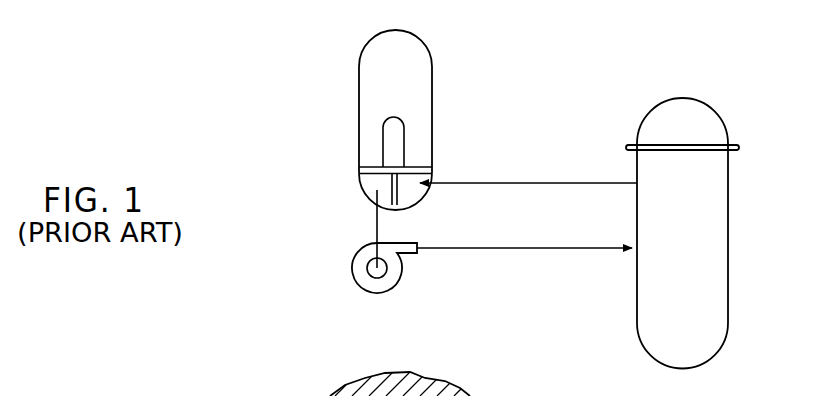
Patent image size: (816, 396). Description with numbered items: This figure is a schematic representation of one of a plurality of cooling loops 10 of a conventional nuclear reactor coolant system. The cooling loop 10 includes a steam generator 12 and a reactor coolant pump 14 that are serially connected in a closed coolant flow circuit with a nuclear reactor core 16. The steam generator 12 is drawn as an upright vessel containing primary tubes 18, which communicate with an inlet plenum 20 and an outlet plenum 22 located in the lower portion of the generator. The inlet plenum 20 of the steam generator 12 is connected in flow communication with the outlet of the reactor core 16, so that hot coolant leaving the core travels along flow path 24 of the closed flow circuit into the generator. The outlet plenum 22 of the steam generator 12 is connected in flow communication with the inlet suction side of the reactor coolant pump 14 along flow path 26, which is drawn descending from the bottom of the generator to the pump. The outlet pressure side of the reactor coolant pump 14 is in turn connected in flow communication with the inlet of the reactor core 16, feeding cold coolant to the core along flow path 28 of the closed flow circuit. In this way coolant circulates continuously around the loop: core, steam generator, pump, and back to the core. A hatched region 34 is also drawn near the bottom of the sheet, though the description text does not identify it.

The cooling loop 10 is at (546, 114).
The steam generator 12 is at (432, 87).
The reactor coolant pump 14 is at (352, 268).
The nuclear reactor core 16 is at (692, 303).
The primary tubes 18 is at (391, 116).
The inlet plenum 20 is at (413, 197).
The outlet plenum 22 is at (367, 184).
The flow path 24 is at (500, 183).
The flow path 26 is at (377, 221).
The flow path 28 is at (532, 247).
The catalyst bed 34 is at (330, 393).